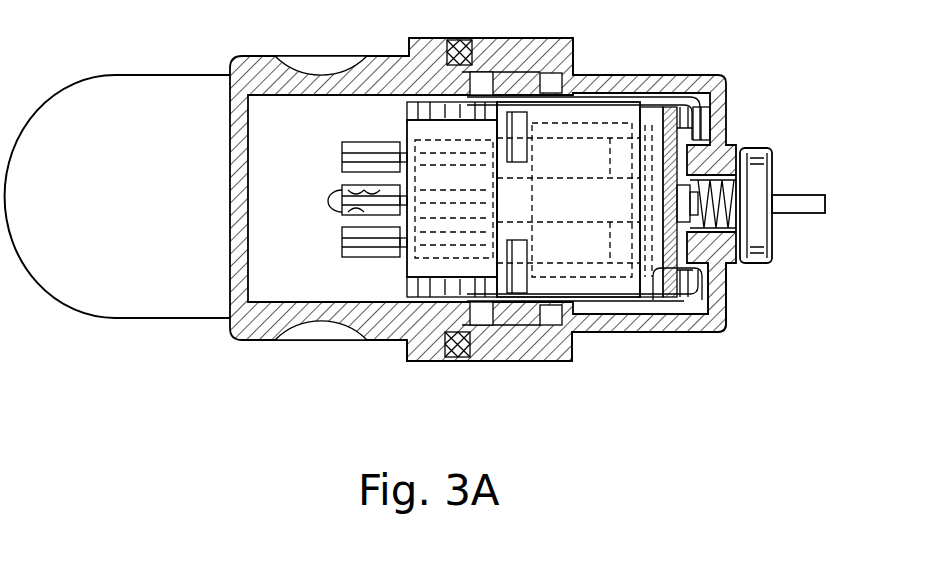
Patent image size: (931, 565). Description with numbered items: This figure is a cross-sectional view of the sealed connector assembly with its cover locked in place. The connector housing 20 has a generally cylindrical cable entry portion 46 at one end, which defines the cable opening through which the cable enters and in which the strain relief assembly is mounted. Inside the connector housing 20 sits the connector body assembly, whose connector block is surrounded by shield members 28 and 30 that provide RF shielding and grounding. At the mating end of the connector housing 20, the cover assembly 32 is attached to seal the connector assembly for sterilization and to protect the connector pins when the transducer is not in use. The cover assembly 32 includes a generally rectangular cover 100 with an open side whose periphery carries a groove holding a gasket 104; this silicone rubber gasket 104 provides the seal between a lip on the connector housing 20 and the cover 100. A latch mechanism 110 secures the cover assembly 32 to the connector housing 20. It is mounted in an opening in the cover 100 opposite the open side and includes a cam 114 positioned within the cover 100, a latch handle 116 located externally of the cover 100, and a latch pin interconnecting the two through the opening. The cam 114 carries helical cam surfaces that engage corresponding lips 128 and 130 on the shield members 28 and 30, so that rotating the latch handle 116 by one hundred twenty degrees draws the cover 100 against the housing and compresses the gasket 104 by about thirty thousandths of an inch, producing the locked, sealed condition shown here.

The cable entry portion 46 is at (124, 322).
The connector housing 20 is at (250, 338).
The cover 100 is at (524, 40).
The cover assembly 32 is at (531, 372).
The gasket 104 is at (485, 362).
The shield member 28 is at (601, 97).
The lip 128 is at (700, 118).
The shield member 30 is at (597, 312).
The cam 114 is at (653, 310).
The lip 130 is at (713, 332).
The latch mechanism 110 is at (789, 190).
The latch handle 116 is at (800, 215).